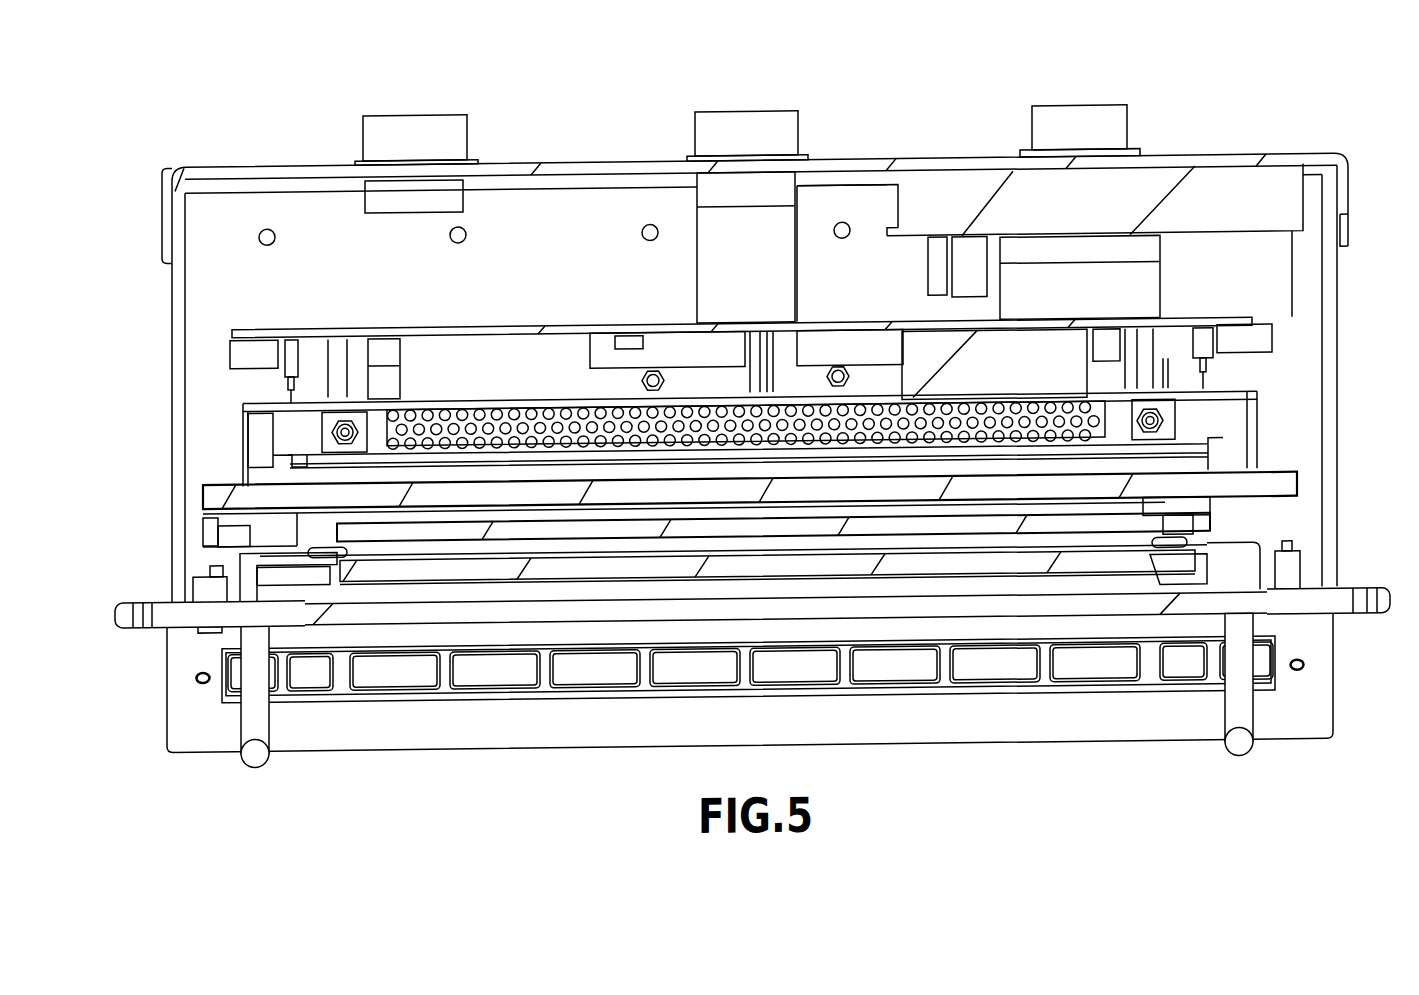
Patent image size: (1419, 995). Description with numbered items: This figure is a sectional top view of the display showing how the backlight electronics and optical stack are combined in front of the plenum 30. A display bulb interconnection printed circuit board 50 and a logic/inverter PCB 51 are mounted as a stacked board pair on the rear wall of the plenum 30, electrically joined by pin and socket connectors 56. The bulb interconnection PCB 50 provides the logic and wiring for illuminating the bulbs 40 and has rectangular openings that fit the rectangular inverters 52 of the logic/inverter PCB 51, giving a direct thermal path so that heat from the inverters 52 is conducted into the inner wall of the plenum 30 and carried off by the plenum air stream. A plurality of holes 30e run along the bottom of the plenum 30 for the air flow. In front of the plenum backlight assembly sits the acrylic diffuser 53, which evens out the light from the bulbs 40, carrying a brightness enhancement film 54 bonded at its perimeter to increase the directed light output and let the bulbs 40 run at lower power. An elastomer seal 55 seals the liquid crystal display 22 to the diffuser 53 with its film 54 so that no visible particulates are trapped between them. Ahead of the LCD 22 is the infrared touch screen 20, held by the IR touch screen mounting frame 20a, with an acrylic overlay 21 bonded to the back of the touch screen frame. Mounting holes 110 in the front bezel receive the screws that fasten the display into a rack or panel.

The infrared touch screen 20 is at (415, 608).
The IR touch screen mounting frame 20a is at (260, 582).
The acrylic overlay 21 is at (380, 569).
The liquid crystal display 22 is at (1177, 529).
The plenum 30 is at (1173, 393).
The holes 30e is at (323, 422).
The bulbs 40 is at (307, 460).
The display bulb interconnection printed circuit board 50 is at (305, 410).
The logic/inverter PCB 51 is at (545, 323).
The inverters 52 is at (1030, 351).
The diffuser 53 is at (1288, 495).
The brightness enhancement film 54 is at (1270, 505).
The elastomer seal 55 is at (1168, 549).
The pin and socket connectors 56 is at (293, 345).
The mounting holes 110 is at (138, 623).